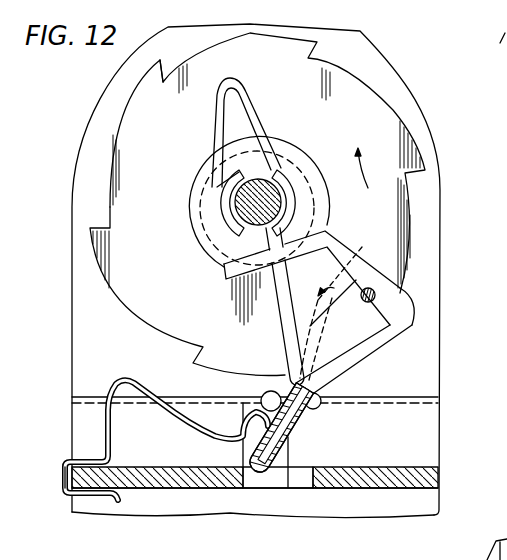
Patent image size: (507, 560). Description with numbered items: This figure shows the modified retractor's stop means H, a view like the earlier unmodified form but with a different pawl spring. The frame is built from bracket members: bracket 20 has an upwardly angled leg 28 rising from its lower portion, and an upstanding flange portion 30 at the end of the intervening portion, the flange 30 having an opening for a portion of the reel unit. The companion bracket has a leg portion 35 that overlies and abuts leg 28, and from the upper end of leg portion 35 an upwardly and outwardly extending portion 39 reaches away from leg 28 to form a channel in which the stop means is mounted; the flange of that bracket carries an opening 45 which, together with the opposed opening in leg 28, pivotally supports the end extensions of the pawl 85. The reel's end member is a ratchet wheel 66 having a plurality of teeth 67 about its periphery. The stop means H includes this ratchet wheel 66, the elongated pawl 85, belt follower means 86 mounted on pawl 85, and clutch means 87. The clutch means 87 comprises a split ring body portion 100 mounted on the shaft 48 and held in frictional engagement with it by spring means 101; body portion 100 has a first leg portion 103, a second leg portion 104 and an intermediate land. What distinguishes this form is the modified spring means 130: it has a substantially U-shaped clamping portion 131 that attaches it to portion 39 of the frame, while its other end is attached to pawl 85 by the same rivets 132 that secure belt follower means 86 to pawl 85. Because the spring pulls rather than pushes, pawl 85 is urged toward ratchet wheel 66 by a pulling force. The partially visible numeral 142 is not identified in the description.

The upstanding flange portion 30 is at (370, 51).
The ratchet wheel 66 is at (395, 108).
The teeth 67 is at (161, 63).
The body portion 100 is at (316, 142).
The shaft 48 is at (247, 200).
The clutch means 87 is at (204, 260).
The spring means 101 is at (249, 95).
The belt follower means 86 is at (356, 258).
The first leg portion 103 is at (410, 301).
The pawl 85 is at (343, 375).
The second leg portion 104 is at (287, 373).
The upwardly angled leg 28 is at (418, 401).
The opening 45 is at (305, 483).
The upwardly and outwardly extending portion 39 is at (420, 459).
The leg portion 35 is at (347, 507).
The rivets 132 is at (298, 438).
The spring means 130 is at (124, 372).
The U-shaped clamping portion 131 is at (62, 493).
The stop means H is at (427, 364).
The member 142 is at (493, 197).
The bracket 20 is at (441, 552).